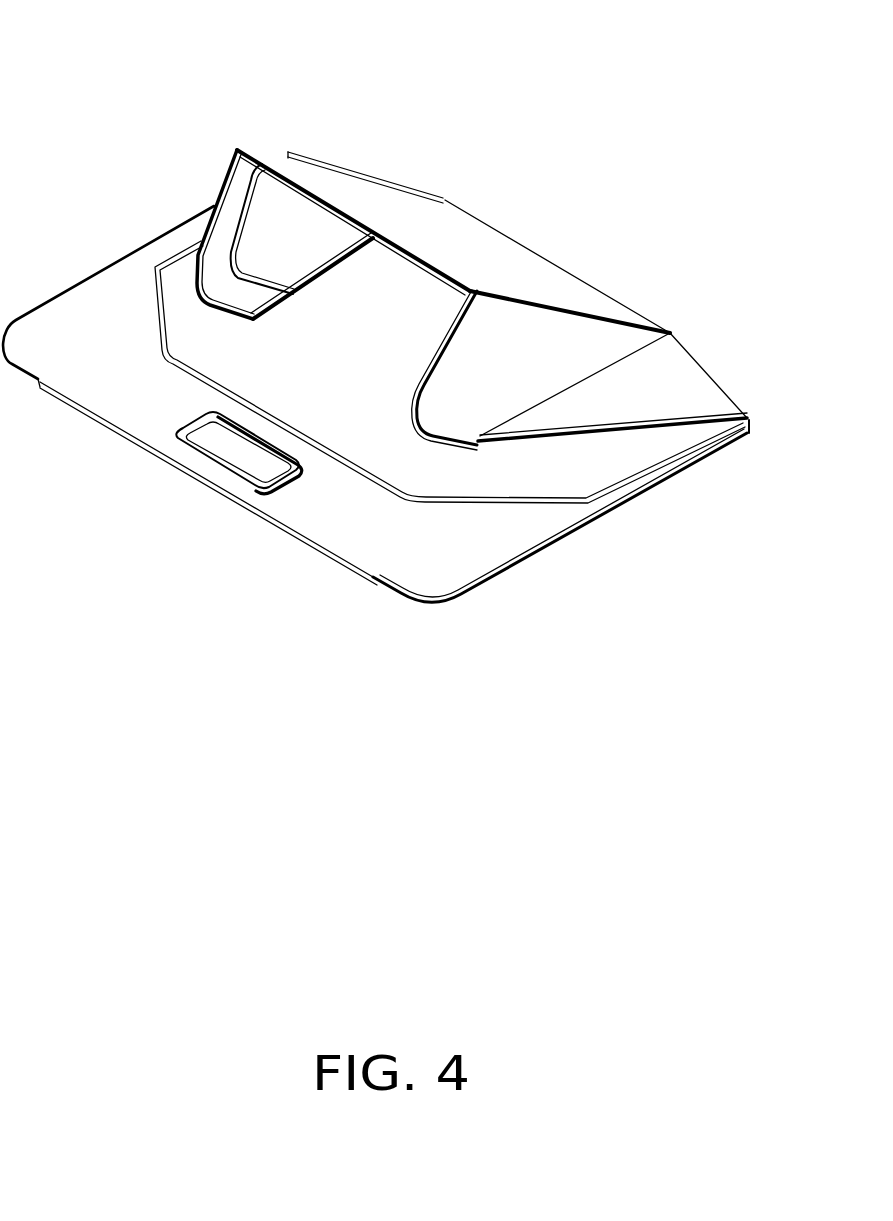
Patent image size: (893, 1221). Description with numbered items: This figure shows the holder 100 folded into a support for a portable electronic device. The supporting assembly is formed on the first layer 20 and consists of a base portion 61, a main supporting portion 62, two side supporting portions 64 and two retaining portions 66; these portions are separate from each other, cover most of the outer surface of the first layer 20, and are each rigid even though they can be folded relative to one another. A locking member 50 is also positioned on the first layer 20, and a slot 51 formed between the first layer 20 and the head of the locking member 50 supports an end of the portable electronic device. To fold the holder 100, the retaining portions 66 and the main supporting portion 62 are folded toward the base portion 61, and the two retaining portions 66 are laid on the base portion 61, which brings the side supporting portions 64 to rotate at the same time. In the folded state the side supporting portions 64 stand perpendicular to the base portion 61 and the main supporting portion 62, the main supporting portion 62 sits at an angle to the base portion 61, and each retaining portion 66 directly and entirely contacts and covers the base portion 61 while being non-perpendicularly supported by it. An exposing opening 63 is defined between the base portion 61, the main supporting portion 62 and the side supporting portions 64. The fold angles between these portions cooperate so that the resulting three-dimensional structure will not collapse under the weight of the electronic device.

The holder 100 is at (140, 54).
The first layer 20 is at (345, 522).
The locking member 50 is at (252, 462).
The slot 51 is at (297, 477).
The base portion 61 is at (537, 477).
The main supporting portion 62 is at (477, 257).
The exposing opening 63 is at (385, 298).
The side supporting portion 64 is at (275, 233).
The retaining portion 66 is at (672, 375).